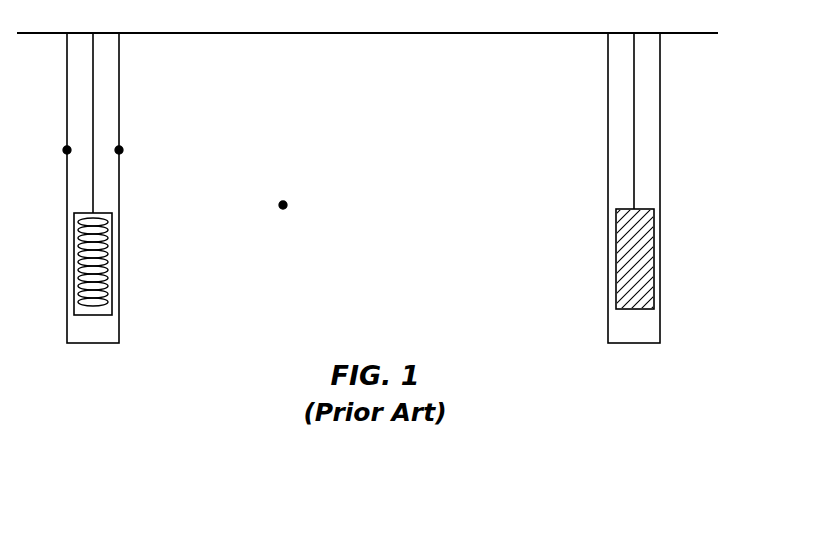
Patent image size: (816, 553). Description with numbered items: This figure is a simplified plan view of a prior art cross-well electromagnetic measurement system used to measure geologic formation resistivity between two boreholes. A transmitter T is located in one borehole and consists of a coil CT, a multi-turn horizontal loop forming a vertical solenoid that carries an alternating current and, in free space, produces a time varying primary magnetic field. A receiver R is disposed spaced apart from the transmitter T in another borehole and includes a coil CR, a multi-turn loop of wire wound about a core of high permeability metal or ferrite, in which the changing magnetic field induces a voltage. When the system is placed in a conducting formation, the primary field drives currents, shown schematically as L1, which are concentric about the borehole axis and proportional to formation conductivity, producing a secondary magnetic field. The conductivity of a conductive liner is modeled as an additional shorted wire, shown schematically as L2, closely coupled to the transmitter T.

The transmitter T is at (150, 186).
The receiver R is at (679, 187).
The transmitter coil CT is at (120, 264).
The receiver coil CR is at (690, 280).
The formation currents L1 is at (308, 185).
The shorted wire L2 is at (118, 130).